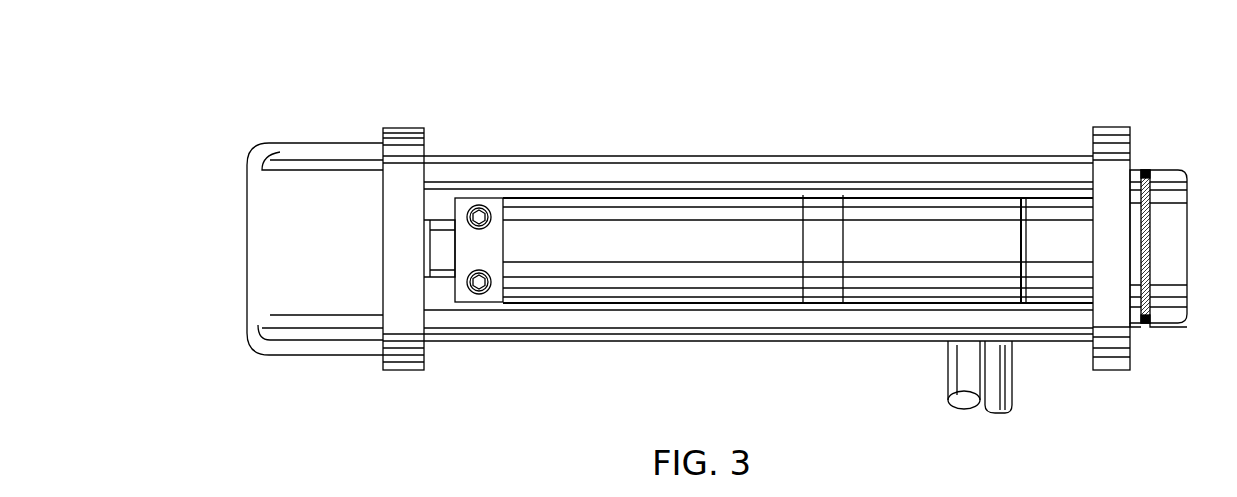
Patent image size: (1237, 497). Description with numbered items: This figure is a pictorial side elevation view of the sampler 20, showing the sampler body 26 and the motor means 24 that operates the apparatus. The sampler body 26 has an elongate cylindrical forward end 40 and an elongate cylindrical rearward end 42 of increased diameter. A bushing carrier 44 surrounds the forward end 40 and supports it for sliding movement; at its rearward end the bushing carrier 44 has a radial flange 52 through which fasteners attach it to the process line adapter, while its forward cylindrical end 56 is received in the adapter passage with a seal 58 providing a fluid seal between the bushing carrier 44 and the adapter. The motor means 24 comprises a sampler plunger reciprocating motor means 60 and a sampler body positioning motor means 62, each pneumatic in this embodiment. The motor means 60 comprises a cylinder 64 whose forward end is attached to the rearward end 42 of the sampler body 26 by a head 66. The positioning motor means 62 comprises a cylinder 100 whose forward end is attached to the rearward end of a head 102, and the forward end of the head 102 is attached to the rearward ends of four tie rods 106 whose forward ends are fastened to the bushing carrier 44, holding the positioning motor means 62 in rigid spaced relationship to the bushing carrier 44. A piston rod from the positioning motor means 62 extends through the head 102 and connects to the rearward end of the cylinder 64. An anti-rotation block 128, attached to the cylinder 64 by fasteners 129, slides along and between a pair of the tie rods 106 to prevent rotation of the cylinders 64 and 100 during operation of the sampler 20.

The sampler 20 is at (904, 90).
The motor means 24 is at (585, 105).
The sampler body 26 is at (1033, 288).
The cylindrical forward end 40 is at (1058, 227).
The cylindrical rearward end 42 is at (980, 237).
The bushing carrier 44 is at (1160, 187).
The radial flange 52 is at (1113, 147).
The forward cylindrical end 56 is at (1157, 325).
The seal 58 is at (1143, 327).
The sampler plunger reciprocating motor means 60 is at (621, 130).
The sampler body positioning motor means 62 is at (279, 95).
The cylinder 64 is at (710, 275).
The head 66 is at (815, 218).
The cylinder 100 is at (296, 320).
The head 102 is at (396, 150).
The tie rods 106 is at (673, 157).
The anti-rotation block 128 is at (491, 245).
The fasteners 129 is at (478, 213).